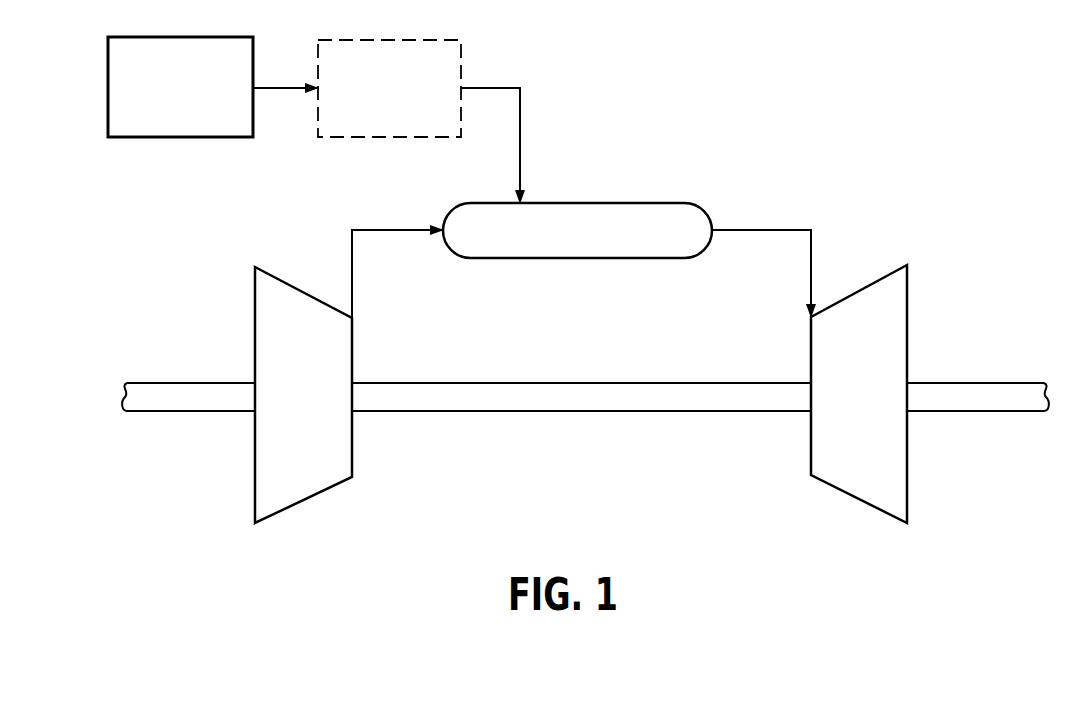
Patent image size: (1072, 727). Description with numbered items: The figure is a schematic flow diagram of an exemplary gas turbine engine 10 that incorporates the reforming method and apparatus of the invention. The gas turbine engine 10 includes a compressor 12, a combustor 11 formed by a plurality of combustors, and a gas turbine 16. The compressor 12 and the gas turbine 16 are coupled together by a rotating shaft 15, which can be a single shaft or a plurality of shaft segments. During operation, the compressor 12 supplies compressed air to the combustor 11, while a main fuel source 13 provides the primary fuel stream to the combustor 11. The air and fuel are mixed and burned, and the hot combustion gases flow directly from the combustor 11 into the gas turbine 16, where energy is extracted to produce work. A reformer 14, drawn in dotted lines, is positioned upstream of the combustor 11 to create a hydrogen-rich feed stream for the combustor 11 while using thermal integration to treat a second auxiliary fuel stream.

The gas turbine engine 10 is at (803, 112).
The combustor 11 is at (561, 242).
The compressor 12 is at (289, 410).
The main fuel source 13 is at (167, 96).
The reformer 14 is at (377, 114).
The rotating shaft 15 is at (590, 411).
The gas turbine 16 is at (845, 410).